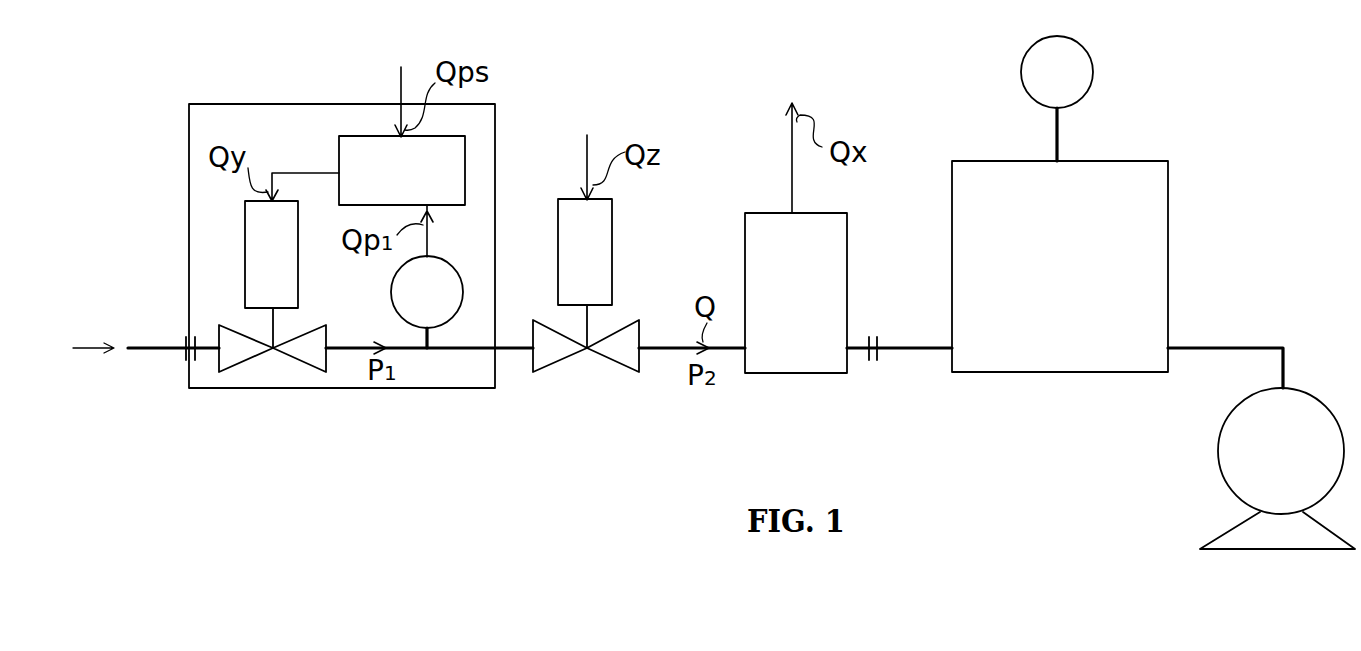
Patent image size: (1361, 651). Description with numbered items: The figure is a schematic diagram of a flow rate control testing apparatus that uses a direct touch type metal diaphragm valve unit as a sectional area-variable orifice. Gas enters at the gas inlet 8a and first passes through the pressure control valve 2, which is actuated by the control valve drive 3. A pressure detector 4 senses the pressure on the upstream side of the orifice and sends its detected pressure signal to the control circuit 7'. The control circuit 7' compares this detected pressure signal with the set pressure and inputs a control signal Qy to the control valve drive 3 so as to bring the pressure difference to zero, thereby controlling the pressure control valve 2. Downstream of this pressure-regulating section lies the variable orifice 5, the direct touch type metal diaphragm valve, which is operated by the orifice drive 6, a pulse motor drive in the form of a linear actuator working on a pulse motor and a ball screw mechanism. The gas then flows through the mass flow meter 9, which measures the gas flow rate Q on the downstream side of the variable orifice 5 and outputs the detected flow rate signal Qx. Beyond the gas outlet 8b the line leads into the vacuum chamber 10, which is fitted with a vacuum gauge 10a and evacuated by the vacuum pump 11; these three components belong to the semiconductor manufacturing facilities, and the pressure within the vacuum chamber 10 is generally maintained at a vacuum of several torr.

The pressure control valve 2 is at (297, 365).
The control valve drive 3 is at (258, 232).
The pressure detector 4 is at (392, 287).
The variable orifice 5 is at (620, 328).
The orifice drive 6 is at (593, 249).
The control circuit 7' is at (439, 158).
The gas inlet 8a is at (183, 343).
The gas outlet 8b is at (880, 353).
The mass flow meter 9 is at (835, 242).
The vacuum chamber 10 is at (1143, 237).
The vacuum gauge 10a is at (1077, 75).
The vacuum pump 11 is at (1302, 415).